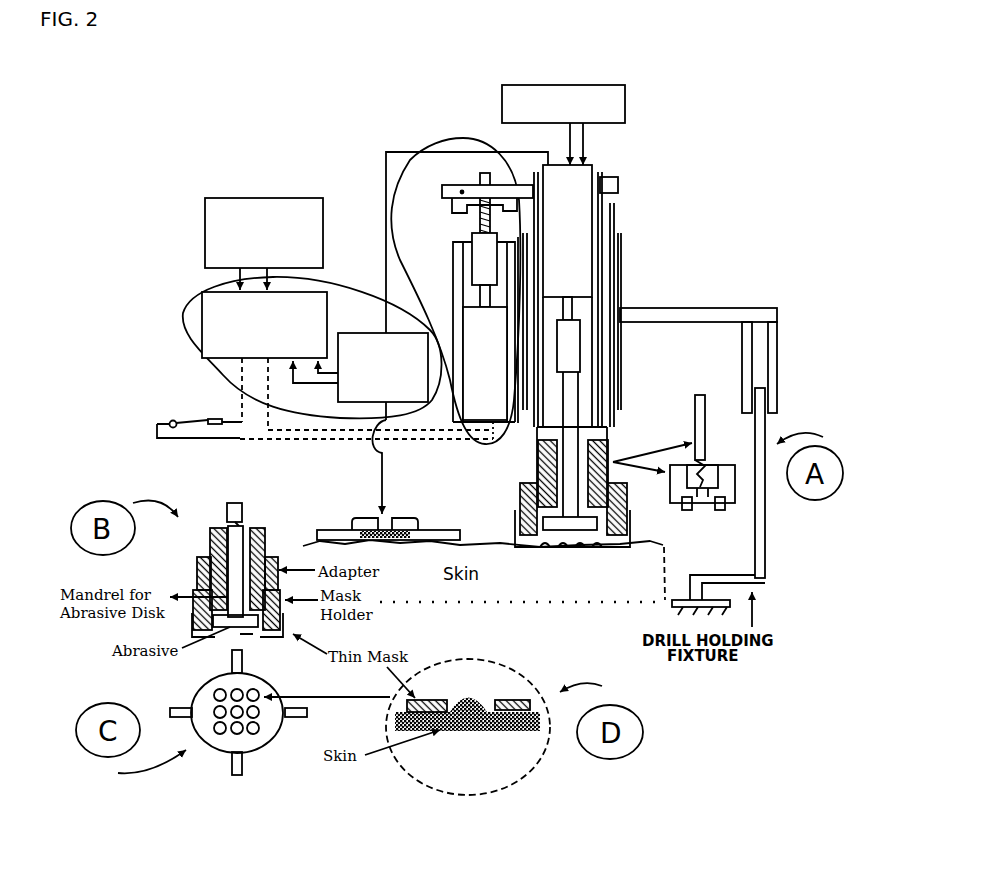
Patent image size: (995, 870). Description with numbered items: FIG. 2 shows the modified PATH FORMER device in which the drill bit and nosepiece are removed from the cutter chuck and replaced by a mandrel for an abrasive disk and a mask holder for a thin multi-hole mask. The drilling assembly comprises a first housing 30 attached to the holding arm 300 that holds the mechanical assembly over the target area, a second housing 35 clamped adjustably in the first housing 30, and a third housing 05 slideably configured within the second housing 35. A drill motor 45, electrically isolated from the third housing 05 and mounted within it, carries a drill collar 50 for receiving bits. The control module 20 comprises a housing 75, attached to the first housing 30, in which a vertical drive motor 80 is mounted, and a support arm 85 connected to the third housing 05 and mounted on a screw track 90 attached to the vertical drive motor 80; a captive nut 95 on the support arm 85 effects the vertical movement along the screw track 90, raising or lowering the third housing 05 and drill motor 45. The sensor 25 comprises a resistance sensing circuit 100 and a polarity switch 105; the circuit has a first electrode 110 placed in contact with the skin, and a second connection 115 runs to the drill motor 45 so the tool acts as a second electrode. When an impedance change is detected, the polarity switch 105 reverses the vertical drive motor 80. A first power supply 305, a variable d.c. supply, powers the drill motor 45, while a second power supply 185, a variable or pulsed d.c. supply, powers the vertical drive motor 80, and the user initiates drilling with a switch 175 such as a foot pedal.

The third housing 05 is at (619, 193).
The control module 20 is at (430, 143).
The sensor 25 is at (192, 290).
The first housing 30 is at (621, 364).
The second housing 35 is at (613, 463).
The drill motor 45 is at (559, 268).
The drill collar 50 is at (577, 354).
The housing 75 is at (453, 277).
The vertical drive motor 80 is at (478, 403).
The support arm 85 is at (455, 186).
The screw track 90 is at (483, 178).
The captive nut 95 is at (475, 212).
The resistance sensing circuit 100 is at (380, 333).
The polarity switch 105 is at (322, 290).
The first electrode 110 is at (340, 528).
The second connection 115 is at (522, 150).
The switch 175 is at (183, 438).
The second power supply 185 is at (205, 222).
The holding arm 300 is at (741, 391).
The first power supply 305 is at (626, 88).